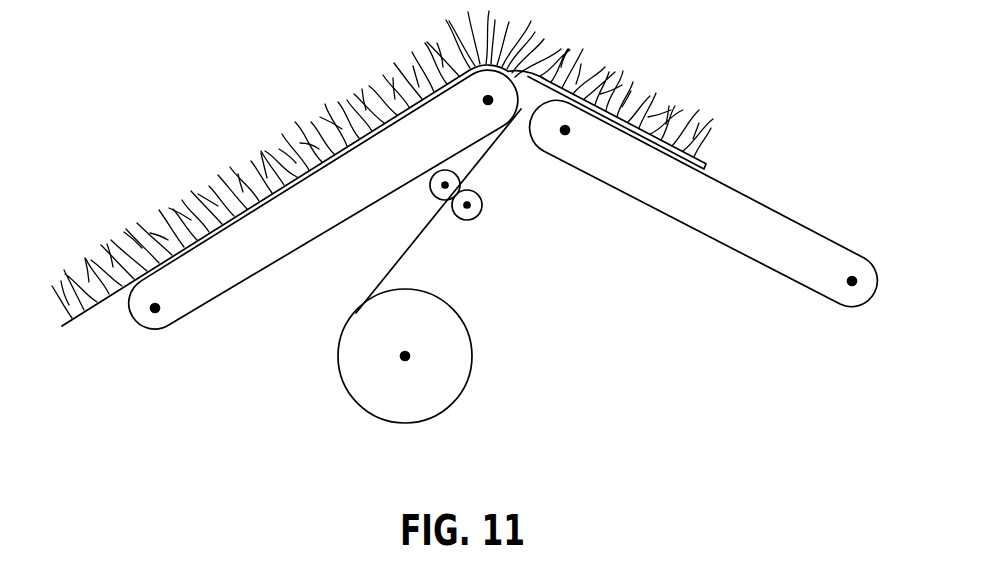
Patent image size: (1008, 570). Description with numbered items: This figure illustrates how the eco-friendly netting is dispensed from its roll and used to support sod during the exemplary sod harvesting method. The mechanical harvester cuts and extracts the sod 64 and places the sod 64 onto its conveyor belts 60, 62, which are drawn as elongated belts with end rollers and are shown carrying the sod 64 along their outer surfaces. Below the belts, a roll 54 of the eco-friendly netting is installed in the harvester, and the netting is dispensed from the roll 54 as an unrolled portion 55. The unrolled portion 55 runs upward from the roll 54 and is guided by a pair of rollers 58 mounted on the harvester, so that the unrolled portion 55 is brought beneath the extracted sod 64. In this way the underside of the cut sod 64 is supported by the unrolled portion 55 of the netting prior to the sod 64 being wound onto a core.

The roll 54 is at (437, 364).
The unrolled portion 55 is at (686, 168).
The rollers 58 is at (453, 177).
The conveyor belt 60 is at (175, 267).
The conveyor belt 62 is at (798, 221).
The sod 64 is at (289, 145).